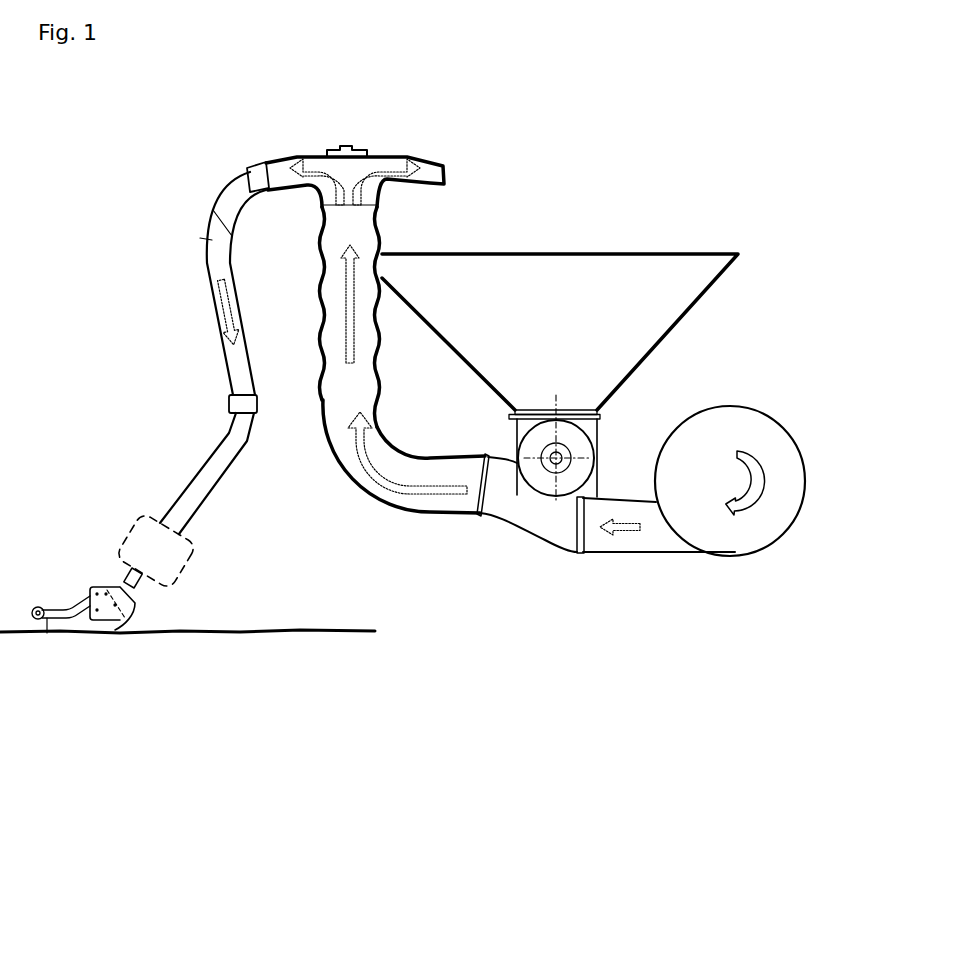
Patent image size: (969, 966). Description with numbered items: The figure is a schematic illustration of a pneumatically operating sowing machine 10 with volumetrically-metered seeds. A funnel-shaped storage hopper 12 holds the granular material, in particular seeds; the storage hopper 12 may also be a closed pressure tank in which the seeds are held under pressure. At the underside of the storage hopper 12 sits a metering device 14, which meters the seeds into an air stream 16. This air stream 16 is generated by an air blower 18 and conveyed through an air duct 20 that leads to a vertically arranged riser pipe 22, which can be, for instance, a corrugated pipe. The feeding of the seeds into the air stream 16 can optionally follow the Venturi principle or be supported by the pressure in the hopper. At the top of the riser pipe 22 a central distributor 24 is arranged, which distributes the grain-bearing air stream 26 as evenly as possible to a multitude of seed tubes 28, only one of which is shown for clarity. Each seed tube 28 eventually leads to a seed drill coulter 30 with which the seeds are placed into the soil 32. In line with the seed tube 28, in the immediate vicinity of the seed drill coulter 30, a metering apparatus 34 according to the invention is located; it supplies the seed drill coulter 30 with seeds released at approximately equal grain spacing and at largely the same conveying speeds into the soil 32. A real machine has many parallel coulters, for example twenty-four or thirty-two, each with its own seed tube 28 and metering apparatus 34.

The sowing machine 10 is at (533, 755).
The storage hopper 12 is at (540, 335).
The metering device 14 is at (585, 448).
The air stream 16 is at (637, 527).
The air blower 18 is at (672, 488).
The air duct 20 is at (525, 530).
The riser pipe 22 is at (362, 238).
The central distributor 24 is at (306, 140).
The grain-bearing air stream 26 is at (420, 490).
The seed tube 28 is at (213, 243).
The seed drill coulter 30 is at (88, 567).
The soil 32 is at (223, 627).
The metering apparatus 34 is at (142, 564).